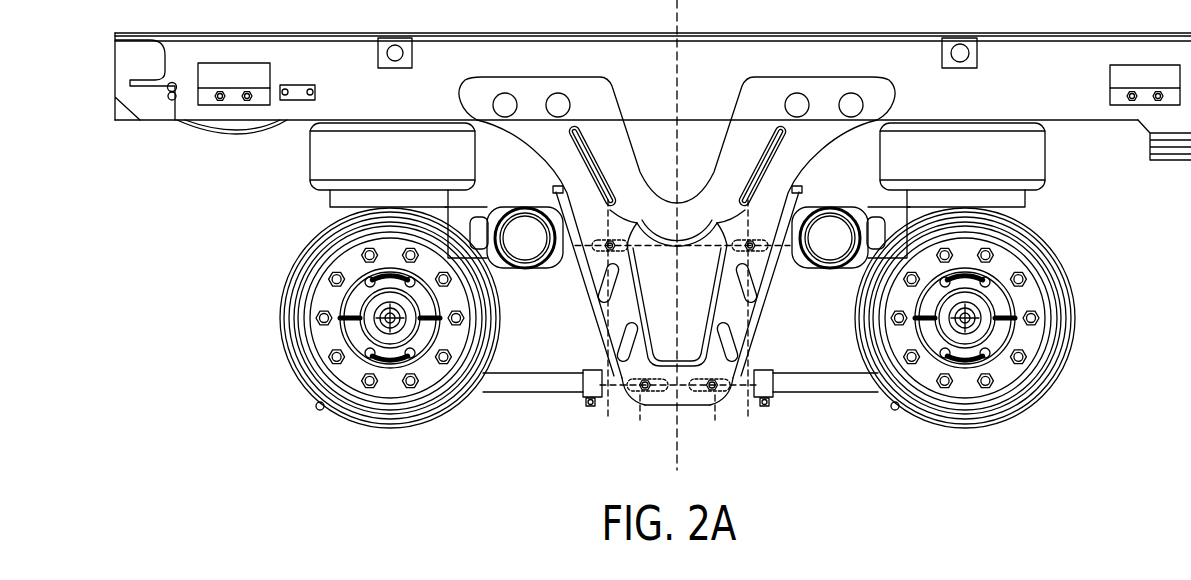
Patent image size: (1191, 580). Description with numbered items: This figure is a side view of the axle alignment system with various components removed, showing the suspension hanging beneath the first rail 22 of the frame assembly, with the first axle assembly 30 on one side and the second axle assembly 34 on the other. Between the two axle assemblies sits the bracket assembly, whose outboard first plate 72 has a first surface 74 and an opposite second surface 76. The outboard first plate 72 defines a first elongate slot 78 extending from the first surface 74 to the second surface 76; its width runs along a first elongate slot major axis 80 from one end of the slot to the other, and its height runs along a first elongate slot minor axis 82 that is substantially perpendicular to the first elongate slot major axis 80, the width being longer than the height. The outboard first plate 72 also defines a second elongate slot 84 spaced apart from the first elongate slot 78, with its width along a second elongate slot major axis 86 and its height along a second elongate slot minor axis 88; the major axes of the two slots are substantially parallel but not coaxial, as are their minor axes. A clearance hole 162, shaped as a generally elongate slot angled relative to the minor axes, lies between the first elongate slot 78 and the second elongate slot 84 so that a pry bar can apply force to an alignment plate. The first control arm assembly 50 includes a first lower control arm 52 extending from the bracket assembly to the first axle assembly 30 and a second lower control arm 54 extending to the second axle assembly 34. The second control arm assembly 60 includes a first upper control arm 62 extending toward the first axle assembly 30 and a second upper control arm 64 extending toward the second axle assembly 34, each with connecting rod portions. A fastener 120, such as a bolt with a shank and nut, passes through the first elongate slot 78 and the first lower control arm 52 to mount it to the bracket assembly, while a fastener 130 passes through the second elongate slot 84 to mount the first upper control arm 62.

The first rail 22 is at (150, 143).
The first axle assembly 30 is at (978, 448).
The second axle assembly 34 is at (410, 448).
The first control arm assembly 50 is at (563, 400).
The first lower control arm 52 is at (828, 378).
The second lower control arm 54 is at (528, 378).
The second control arm assembly 60 is at (547, 283).
The first upper control arm 62 is at (850, 207).
The second upper control arm 64 is at (490, 207).
The outboard first plate 72 is at (663, 235).
The first surface 74 is at (806, 137).
The second surface 76 is at (836, 137).
The first elongate slot 78 is at (708, 403).
The first elongate slot major axis 80 is at (588, 404).
The first elongate slot minor axis 82 is at (620, 362).
The second elongate slot 84 is at (748, 232).
The second elongate slot major axis 86 is at (712, 256).
The second elongate slot minor axis 88 is at (622, 203).
The fastener 120 is at (705, 378).
The fastener 130 is at (612, 244).
The clearance hole 162 is at (748, 345).